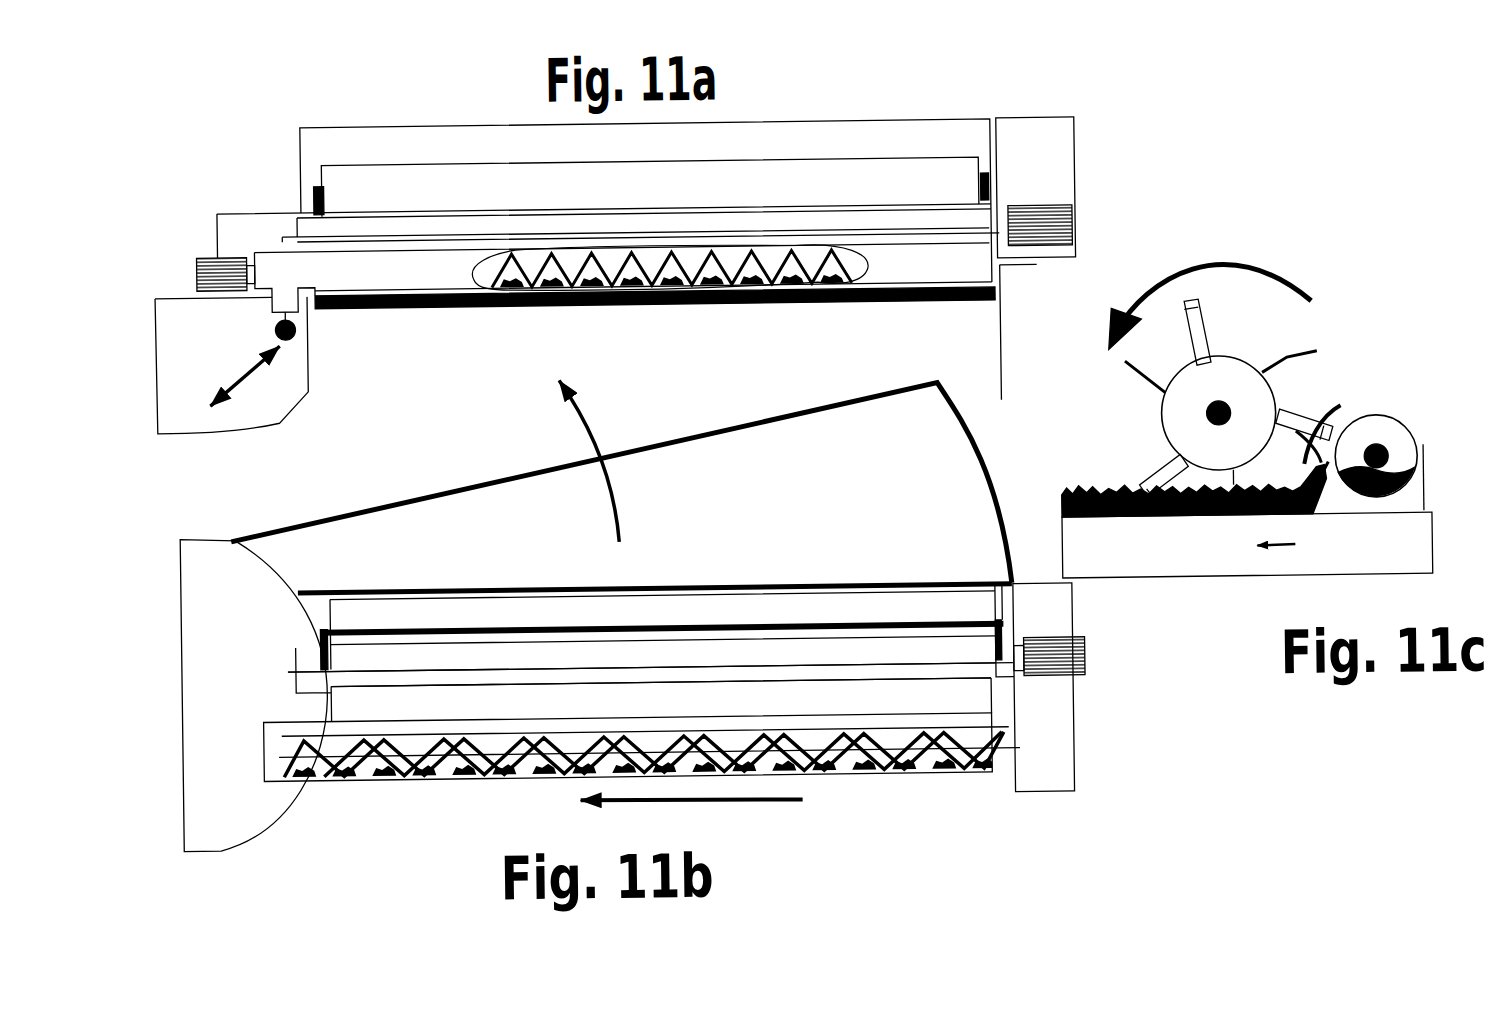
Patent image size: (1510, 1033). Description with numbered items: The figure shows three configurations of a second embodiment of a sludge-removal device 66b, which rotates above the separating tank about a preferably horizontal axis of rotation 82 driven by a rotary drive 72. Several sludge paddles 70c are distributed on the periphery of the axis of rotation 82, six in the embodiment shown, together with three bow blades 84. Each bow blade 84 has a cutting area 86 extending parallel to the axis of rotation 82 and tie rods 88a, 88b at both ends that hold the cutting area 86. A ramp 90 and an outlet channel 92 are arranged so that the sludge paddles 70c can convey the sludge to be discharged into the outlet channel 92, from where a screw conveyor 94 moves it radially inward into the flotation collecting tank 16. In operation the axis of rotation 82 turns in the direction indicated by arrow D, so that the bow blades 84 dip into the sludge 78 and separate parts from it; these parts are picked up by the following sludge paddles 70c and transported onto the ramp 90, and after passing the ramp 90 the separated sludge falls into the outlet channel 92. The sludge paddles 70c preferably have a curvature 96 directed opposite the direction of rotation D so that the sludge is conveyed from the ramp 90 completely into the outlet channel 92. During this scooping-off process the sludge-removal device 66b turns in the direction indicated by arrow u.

In FIG. 11A, the sludge-removal device 66b is at (406, 103).
In FIG. 11B, the sludge-removal device 66b is at (428, 462).
In FIG. 11C, the sludge-removal device 66b is at (1352, 232).
In FIG. 11A, the screw conveyor 94 is at (811, 262).
In FIG. 11B, the screw conveyor 94 is at (808, 778).
In FIG. 11C, the screw conveyor 94 is at (1406, 458).
In FIG. 11A, the sludge paddle 70c is at (952, 170).
In FIG. 11B, the sludge paddle 70c is at (908, 474).
In FIG. 11C, the sludge paddle 70c is at (1132, 458).
In FIG. 11A, the rotary drive 72 is at (1078, 214).
In FIG. 11B, the rotary drive 72 is at (1084, 663).
In FIG. 11A, the flotation collecting tank 16 is at (204, 358).
In FIG. 11B, the flotation collecting tank 16 is at (224, 706).
In FIG. 11B, the tie rod 88a is at (320, 648).
In FIG. 11B, the cutting area 86 is at (762, 616).
In FIG. 11C, the cutting area 86 is at (1343, 419).
In FIG. 11B, the bow blade 84 is at (1010, 628).
In FIG. 11C, the bow blade 84 is at (1194, 312).
In FIG. 11B, the tie rod 88b is at (1013, 646).
In FIG. 11C, the tie rod 88b is at (1192, 336).
In FIG. 11B, the axis of rotation 82 is at (946, 662).
In FIG. 11C, the axis of rotation 82 is at (1286, 405).
In FIG. 11C, the sludge 78 is at (1163, 530).
In FIG. 11C, the ramp 90 is at (1306, 494).
In FIG. 11C, the outlet channel 92 is at (1413, 506).
In FIG. 11C, the curvature 96 is at (1143, 398).
In FIG. 11C, the direction of rotation D is at (1250, 272).
In FIG. 11C, the direction of rotation u is at (1288, 546).